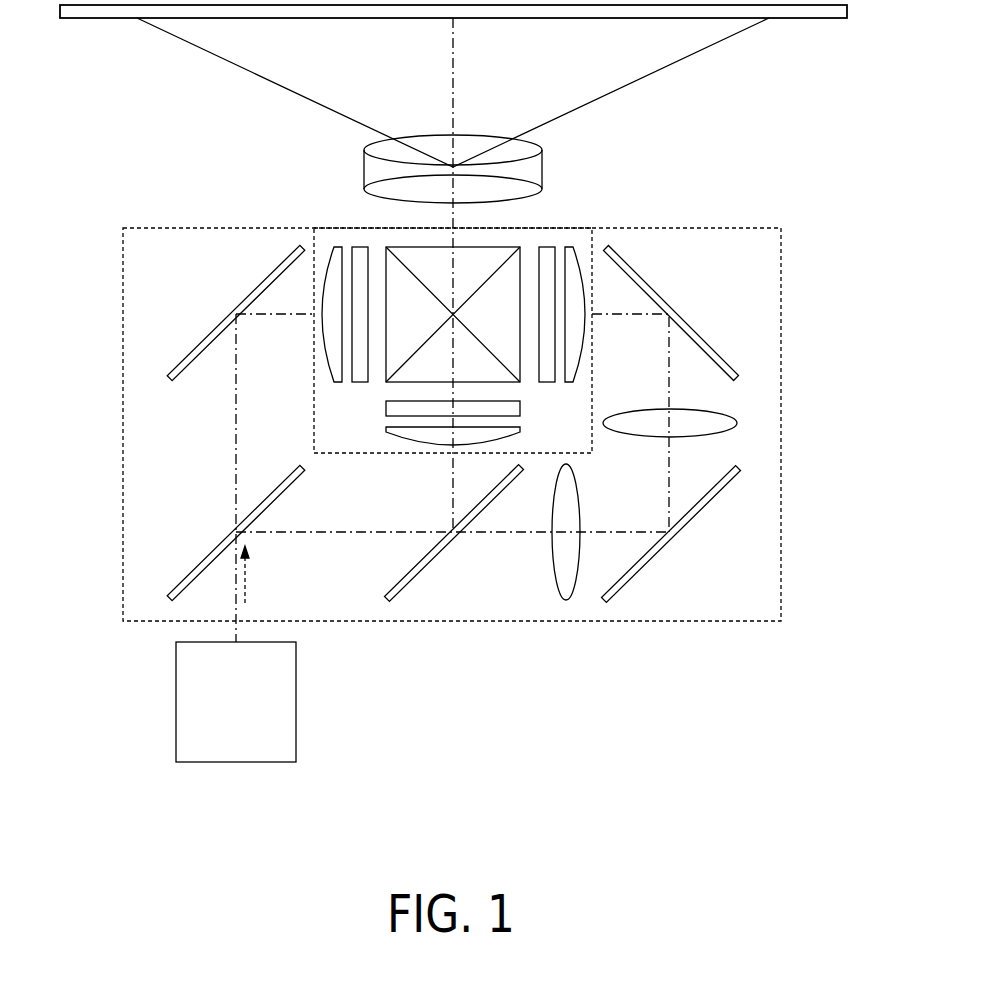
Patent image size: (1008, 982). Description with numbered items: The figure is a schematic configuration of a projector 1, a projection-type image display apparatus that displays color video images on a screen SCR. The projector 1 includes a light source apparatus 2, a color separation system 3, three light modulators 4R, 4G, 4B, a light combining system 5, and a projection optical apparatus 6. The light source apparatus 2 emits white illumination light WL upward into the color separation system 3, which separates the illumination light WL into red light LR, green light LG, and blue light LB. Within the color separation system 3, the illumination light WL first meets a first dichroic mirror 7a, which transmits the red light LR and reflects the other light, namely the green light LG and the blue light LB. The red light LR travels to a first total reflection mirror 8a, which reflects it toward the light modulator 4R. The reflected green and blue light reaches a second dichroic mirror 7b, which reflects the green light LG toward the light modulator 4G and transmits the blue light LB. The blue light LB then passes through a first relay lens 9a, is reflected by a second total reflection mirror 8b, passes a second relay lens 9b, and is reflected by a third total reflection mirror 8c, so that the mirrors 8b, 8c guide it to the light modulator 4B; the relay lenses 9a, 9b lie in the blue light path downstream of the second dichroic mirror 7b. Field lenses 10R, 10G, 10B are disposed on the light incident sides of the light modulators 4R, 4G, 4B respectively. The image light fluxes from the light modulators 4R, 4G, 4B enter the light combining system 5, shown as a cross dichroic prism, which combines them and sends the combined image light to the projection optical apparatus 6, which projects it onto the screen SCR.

The projector 1 is at (785, 208).
The light source apparatus 2 is at (297, 698).
The color separation system 3 is at (123, 368).
The light modulator 4R is at (358, 245).
The light modulator 4G is at (390, 410).
The light modulator 4B is at (546, 245).
The light combining system 5 is at (478, 252).
The projection optical apparatus 6 is at (433, 147).
The first dichroic mirror 7a is at (197, 562).
The second dichroic mirror 7b is at (430, 565).
The first total reflection mirror 8a is at (212, 330).
The second total reflection mirror 8b is at (695, 518).
The third total reflection mirror 8c is at (697, 331).
The first relay lens 9a is at (552, 553).
The second relay lens 9b is at (732, 412).
The field lens 10R is at (336, 247).
The field lens 10G is at (390, 432).
The field lens 10B is at (570, 247).
The screen SCR is at (814, 20).
The illumination light WL is at (247, 585).
The red light LR is at (236, 445).
The green light LG is at (452, 488).
The blue light LB is at (668, 480).